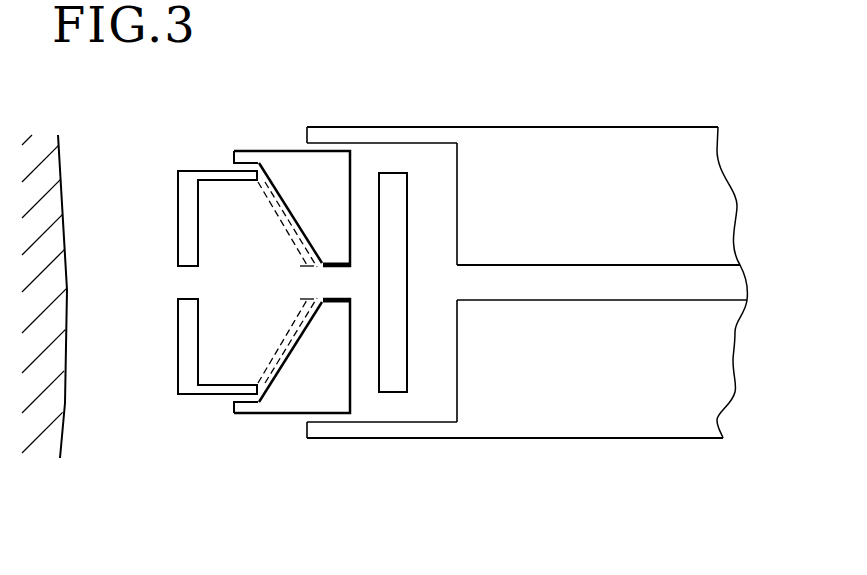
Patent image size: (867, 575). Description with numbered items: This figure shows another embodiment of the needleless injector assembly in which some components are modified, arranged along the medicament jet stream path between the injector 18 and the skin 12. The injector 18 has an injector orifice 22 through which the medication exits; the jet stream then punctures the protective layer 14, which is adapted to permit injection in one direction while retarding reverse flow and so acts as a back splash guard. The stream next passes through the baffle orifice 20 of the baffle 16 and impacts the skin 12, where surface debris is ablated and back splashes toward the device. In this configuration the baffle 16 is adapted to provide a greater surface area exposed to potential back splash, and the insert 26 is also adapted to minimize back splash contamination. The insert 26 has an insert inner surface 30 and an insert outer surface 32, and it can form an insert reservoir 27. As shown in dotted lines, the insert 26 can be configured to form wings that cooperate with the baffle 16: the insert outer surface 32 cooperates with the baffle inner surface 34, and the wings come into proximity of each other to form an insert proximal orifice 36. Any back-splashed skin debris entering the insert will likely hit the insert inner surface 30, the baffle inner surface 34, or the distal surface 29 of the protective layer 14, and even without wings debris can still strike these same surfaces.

The skin 12 is at (65, 403).
The protective layer 14 is at (400, 355).
The baffle 16 is at (327, 400).
The injector 18 is at (622, 143).
The baffle orifice 20 is at (340, 282).
The injector orifice 22 is at (457, 282).
The insert 26 is at (187, 387).
The insert reservoir 27 is at (223, 238).
The distal surface 29 is at (380, 215).
The insert inner surface 30 is at (263, 217).
The insert outer surface 32 is at (280, 197).
The baffle inner surface 34 is at (263, 397).
The insert proximal orifice 36 is at (313, 282).